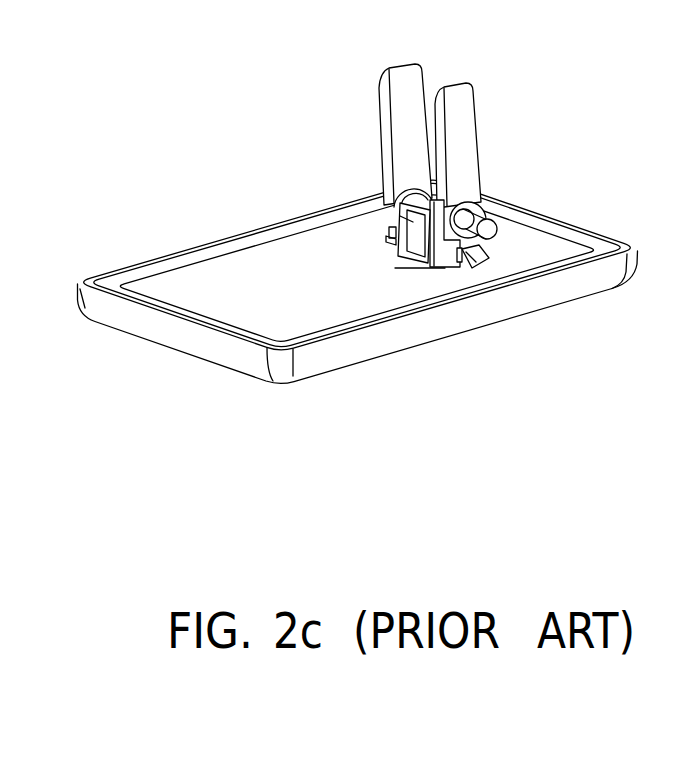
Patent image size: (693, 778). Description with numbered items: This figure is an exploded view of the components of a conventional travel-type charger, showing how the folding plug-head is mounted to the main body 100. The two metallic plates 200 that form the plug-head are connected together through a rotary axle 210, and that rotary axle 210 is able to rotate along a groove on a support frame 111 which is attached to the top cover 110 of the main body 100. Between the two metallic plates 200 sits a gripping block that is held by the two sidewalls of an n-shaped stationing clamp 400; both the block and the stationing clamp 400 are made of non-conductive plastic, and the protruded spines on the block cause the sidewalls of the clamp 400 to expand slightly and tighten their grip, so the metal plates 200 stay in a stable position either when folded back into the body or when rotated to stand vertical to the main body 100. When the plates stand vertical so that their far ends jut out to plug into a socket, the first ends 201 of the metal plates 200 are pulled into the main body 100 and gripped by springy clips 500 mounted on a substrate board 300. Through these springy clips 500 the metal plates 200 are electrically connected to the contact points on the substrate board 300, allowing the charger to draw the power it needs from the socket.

The main body 100 is at (150, 537).
The top cover 110 is at (158, 333).
The support frame 111 is at (442, 255).
The metallic plates 200 is at (462, 113).
The first ends 201 is at (392, 228).
The rotary axle 210 is at (483, 227).
The substrate board 300 is at (243, 268).
The n-shaped stationing clamp 400 is at (393, 215).
The springy clips 500 is at (392, 238).